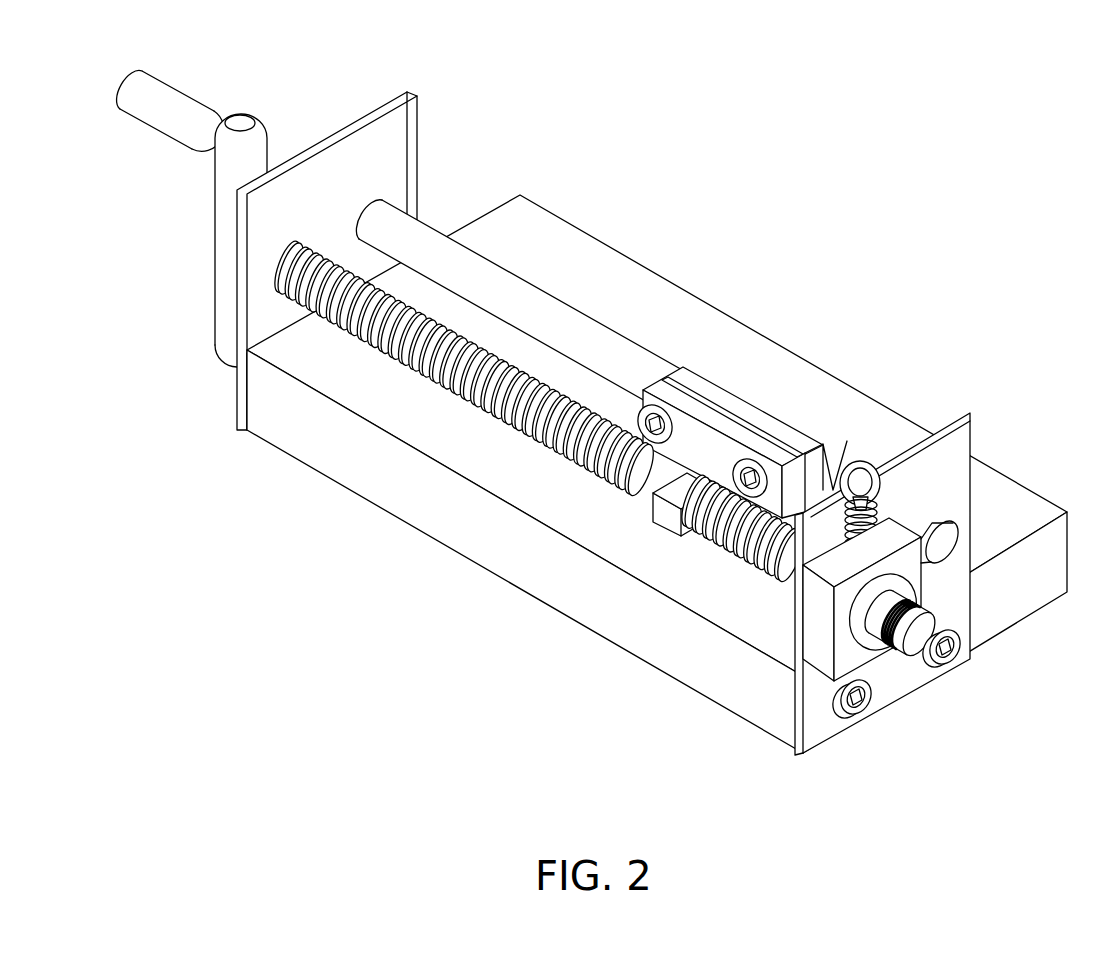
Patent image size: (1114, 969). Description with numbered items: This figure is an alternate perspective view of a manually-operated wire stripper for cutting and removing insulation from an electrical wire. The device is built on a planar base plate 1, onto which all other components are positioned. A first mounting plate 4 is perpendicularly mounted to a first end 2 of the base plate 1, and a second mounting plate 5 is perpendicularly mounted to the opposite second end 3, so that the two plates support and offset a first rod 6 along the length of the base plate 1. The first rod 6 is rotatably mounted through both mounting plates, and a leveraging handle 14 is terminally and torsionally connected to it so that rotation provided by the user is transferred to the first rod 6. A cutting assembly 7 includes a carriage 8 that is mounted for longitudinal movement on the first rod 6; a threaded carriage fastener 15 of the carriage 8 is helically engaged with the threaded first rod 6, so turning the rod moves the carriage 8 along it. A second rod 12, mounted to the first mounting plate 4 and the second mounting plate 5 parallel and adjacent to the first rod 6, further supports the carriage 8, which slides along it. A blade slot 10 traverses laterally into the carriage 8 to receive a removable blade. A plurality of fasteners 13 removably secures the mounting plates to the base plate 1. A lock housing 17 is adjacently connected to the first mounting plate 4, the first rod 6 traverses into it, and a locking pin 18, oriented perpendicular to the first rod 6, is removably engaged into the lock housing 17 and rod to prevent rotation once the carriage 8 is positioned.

The base plate 1 is at (484, 596).
The first end 2 is at (1050, 569).
The second end 3 is at (478, 203).
The first mounting plate 4 is at (951, 426).
The second mounting plate 5 is at (351, 132).
The first rod 6 is at (571, 486).
The cutting assembly 7 is at (739, 404).
The carriage 8 is at (800, 443).
The blade slot 10 is at (726, 403).
The second rod 12 is at (519, 289).
The plurality of fasteners 13 is at (940, 628).
The leveraging handle 14 is at (162, 86).
The carriage fastener 15 is at (673, 519).
The lock housing 17 is at (812, 628).
The locking pin 18 is at (882, 490).